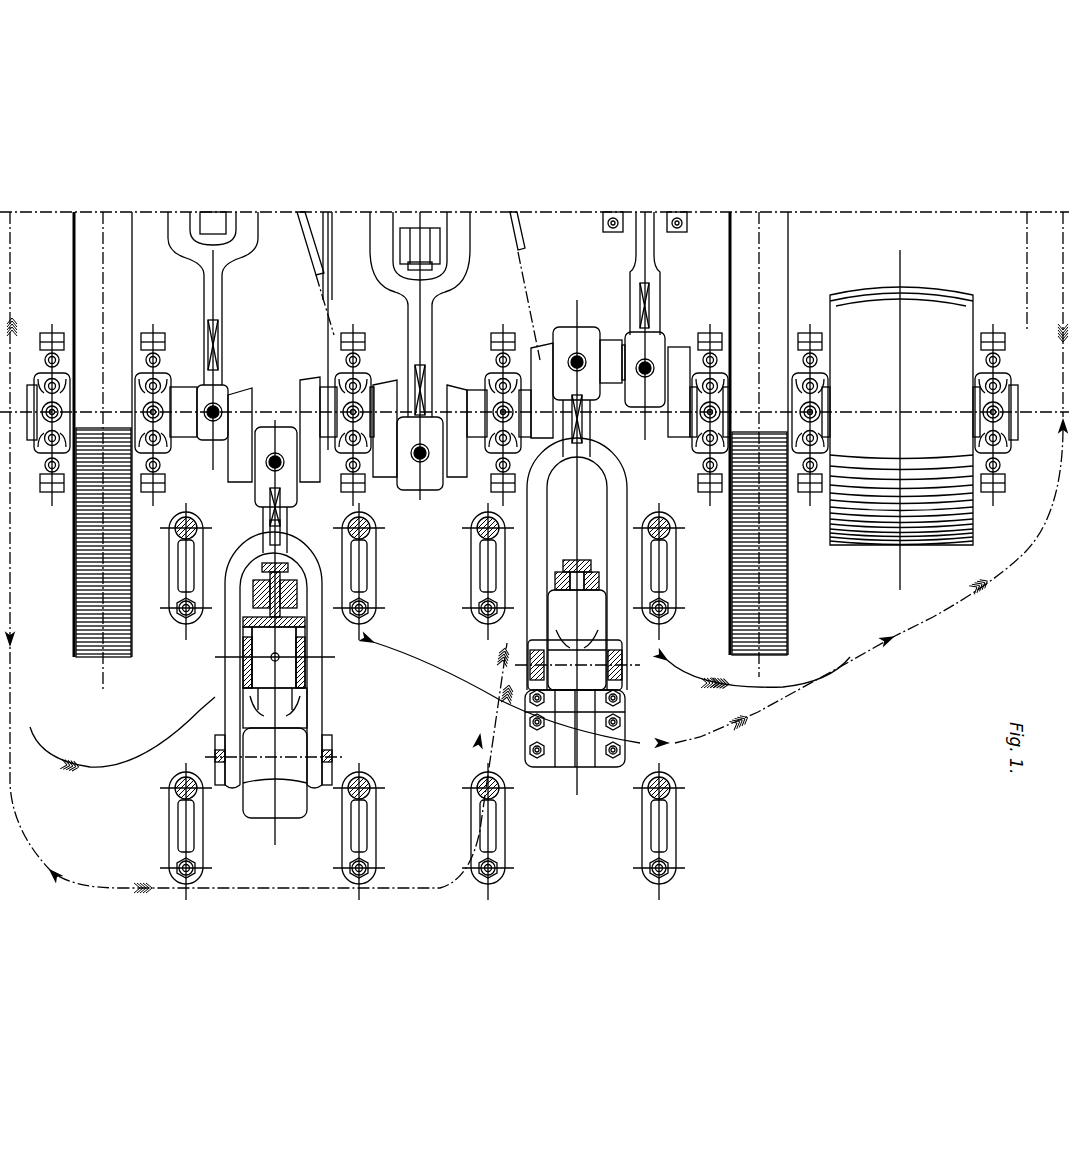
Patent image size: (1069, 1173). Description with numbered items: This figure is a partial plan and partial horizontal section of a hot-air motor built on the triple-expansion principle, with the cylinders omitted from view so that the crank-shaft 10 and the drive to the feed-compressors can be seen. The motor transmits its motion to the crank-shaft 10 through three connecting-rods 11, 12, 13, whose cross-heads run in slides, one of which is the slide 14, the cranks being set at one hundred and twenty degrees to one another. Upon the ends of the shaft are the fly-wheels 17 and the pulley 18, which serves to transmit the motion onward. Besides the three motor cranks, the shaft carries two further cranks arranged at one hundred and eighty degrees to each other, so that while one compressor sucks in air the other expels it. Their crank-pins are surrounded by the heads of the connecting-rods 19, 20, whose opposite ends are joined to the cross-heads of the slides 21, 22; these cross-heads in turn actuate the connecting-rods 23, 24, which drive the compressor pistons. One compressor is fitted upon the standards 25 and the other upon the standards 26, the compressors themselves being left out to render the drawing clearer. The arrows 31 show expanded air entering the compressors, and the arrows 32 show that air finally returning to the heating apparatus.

The crank-shaft 10 is at (1012, 418).
The connecting-rod 11 is at (224, 308).
The connecting-rod 12 is at (434, 312).
The connecting-rod 13 is at (660, 255).
The slide 14 is at (262, 225).
The fly-wheels 17 is at (115, 520).
The pulley 18 is at (905, 430).
The connecting-rod 19 is at (238, 540).
The connecting-rod 20 is at (543, 510).
The slide 21 is at (350, 700).
The slide 22 is at (600, 767).
The connecting-rod 23 is at (274, 686).
The connecting-rod 24 is at (586, 640).
The standards 25 is at (160, 560).
The standards 26 is at (482, 558).
The arrows 31 is at (440, 672).
The arrows 32 is at (12, 285).